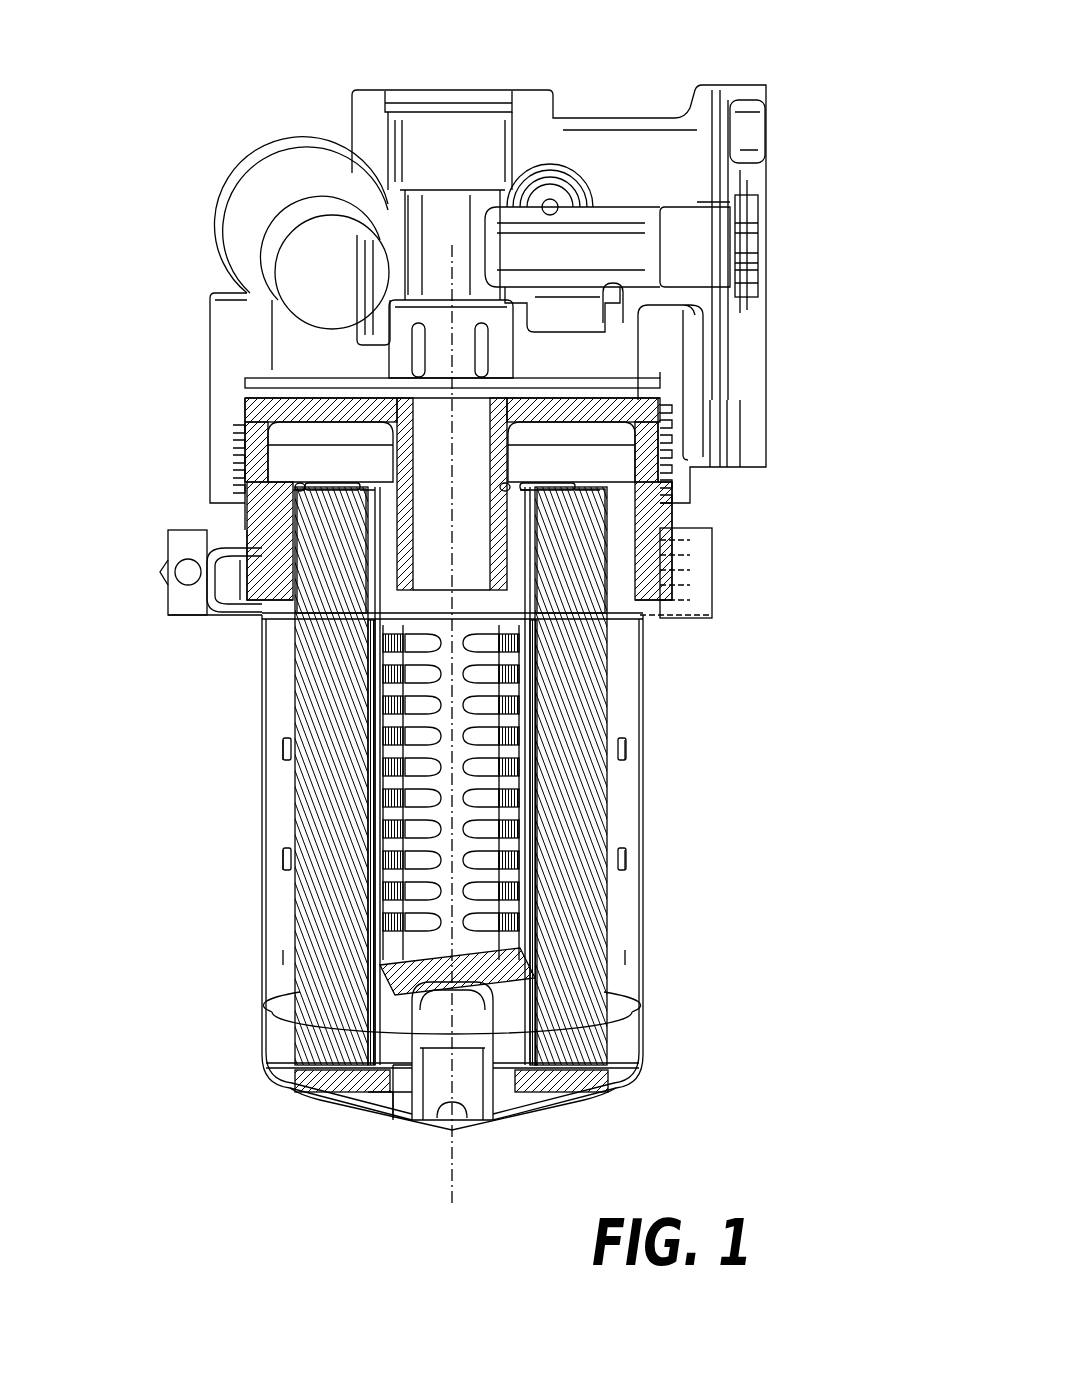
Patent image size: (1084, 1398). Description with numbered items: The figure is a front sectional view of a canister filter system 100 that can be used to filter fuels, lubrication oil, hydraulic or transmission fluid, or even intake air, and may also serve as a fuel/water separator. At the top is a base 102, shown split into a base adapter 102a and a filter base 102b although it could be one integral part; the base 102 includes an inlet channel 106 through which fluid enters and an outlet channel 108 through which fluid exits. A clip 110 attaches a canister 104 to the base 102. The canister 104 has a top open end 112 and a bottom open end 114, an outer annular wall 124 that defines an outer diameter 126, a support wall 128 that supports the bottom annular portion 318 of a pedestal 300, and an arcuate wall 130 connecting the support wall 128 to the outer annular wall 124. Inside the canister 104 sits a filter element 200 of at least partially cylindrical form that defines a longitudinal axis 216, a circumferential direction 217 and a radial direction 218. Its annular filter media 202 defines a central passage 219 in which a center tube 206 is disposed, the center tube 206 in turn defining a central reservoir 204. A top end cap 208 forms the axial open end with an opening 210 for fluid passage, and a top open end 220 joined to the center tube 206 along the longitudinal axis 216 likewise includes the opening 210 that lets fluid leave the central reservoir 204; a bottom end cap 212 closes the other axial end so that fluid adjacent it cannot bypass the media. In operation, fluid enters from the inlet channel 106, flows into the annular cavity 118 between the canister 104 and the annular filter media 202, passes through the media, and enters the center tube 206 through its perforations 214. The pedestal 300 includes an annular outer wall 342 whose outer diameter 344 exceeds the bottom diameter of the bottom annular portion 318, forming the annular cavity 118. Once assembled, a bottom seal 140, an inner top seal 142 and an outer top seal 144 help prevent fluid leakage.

The canister filter system 100 is at (446, 54).
The base 102 is at (531, 303).
The base adapter 102a is at (660, 618).
The filter base 102b is at (752, 380).
The canister 104 is at (645, 868).
The inlet channel 106 is at (300, 412).
The outlet channel 108 is at (437, 450).
The clip 110 is at (186, 600).
The top open end 112 is at (320, 488).
The bottom open end 114 is at (372, 1098).
The annular cavity 118 is at (262, 800).
The outer annular wall 124 is at (640, 770).
The outer diameter 126 is at (335, 607).
The support wall 128 is at (405, 1080).
The arcuate wall 130 is at (300, 1100).
The bottom seal 140 is at (395, 1075).
The inner top seal 142 is at (505, 485).
The outer top seal 144 is at (262, 618).
The filter element 200 is at (620, 956).
The annular filter media 202 is at (587, 826).
The central reservoir 204 is at (485, 762).
The center tube 206 is at (488, 712).
The top end cap 208 is at (585, 470).
The opening 210 is at (345, 486).
The bottom end cap 212 is at (520, 1085).
The perforations 214 is at (505, 660).
The longitudinal axis 216 is at (455, 1185).
The circumferential direction 217 is at (610, 1000).
The radial direction 218 is at (515, 952).
The central passage 219 is at (500, 980).
The top open end 220 is at (487, 537).
The pedestal 300 is at (522, 1110).
The bottom annular portion 318 is at (545, 1110).
The annular outer wall 342 is at (262, 890).
The outer diameter 344 is at (545, 610).